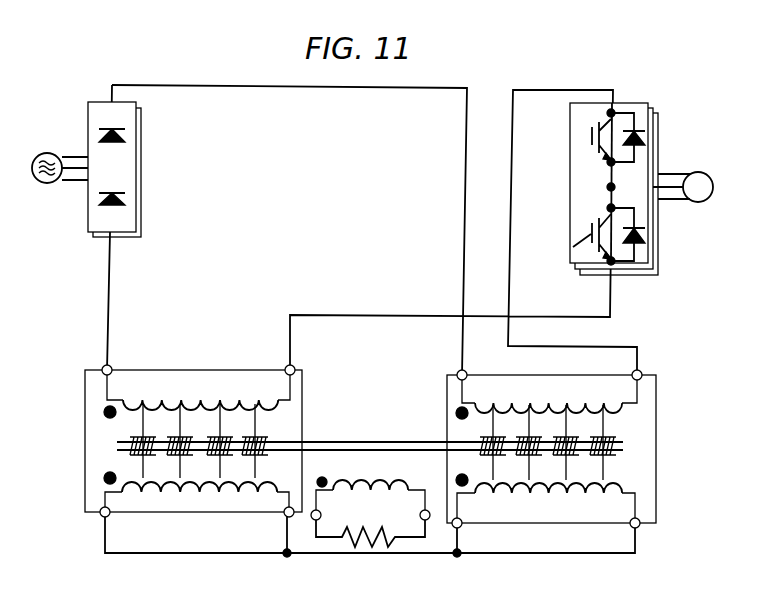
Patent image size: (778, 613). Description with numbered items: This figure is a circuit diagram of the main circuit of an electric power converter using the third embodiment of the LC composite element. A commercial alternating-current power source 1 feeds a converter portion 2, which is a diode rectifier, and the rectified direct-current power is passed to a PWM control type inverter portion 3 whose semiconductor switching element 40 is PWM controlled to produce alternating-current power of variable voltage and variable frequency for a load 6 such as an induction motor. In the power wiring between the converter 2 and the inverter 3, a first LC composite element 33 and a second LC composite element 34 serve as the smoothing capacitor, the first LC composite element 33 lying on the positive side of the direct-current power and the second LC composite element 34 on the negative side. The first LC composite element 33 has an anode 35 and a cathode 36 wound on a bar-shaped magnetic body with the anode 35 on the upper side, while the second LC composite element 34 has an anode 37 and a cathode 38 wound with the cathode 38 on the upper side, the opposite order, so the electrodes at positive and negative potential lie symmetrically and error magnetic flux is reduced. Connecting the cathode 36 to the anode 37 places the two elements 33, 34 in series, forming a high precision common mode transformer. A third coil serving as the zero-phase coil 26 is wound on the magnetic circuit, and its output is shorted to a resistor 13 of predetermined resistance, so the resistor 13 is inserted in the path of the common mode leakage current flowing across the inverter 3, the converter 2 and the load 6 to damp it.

The commercial alternating-current power source 1 is at (44, 150).
The converter portion 2 is at (130, 106).
The inverter portion 3 is at (614, 161).
The load 6 is at (702, 172).
The resistor 13 is at (378, 546).
The zero-phase coil 26 is at (358, 465).
The first LC composite element 33 is at (654, 438).
The second LC composite element 34 is at (175, 370).
The anode 35 is at (583, 405).
The cathode 36 is at (555, 492).
The anode 37 is at (192, 495).
The cathode 38 is at (215, 397).
The semiconductor switching element 40 is at (608, 135).